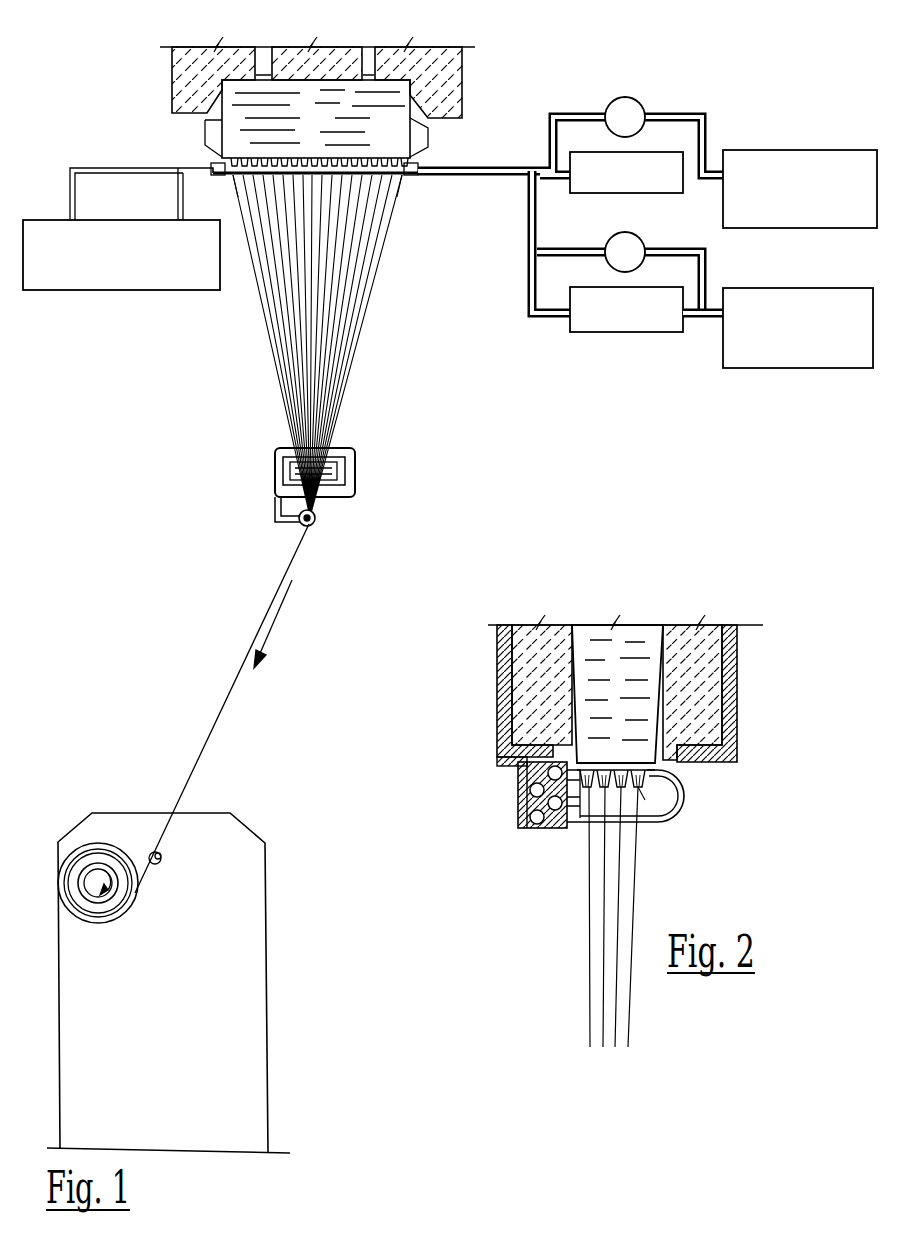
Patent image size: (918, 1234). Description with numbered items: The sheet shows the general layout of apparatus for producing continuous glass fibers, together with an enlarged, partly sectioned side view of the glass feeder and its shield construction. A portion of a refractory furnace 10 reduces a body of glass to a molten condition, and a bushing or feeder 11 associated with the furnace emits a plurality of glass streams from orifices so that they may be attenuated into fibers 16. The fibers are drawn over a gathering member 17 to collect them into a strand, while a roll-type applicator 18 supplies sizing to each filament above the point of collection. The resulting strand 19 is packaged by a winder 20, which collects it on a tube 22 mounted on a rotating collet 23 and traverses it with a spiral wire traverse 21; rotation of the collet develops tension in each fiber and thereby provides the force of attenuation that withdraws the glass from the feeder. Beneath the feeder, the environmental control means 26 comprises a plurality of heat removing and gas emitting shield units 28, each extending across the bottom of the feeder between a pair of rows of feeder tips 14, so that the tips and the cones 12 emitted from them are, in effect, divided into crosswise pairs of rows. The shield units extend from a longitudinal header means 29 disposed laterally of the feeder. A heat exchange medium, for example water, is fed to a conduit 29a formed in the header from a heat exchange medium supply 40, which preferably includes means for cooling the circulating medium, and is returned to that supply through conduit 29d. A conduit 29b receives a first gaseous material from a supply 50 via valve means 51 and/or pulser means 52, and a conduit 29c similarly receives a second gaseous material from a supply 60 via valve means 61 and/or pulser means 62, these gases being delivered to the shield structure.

In FIG. 1, the refractory furnace 10 is at (350, 44).
In FIG. 1, the bushing or feeder 11 is at (227, 98).
In FIG. 2, the bushing or feeder 11 is at (574, 652).
In FIG. 2, the cones 12 is at (645, 797).
In FIG. 1, the feeder tips 14 is at (345, 168).
In FIG. 2, the feeder tips 14 is at (652, 773).
In FIG. 1, the fibers 16 is at (305, 330).
In FIG. 1, the gathering member 17 is at (300, 525).
In FIG. 1, the roll-type applicator 18 is at (355, 450).
In FIG. 1, the strand 19 is at (272, 603).
In FIG. 1, the winder 20 is at (236, 810).
In FIG. 1, the spiral wire traverse 21 is at (155, 865).
In FIG. 1, the tube 22 is at (80, 860).
In FIG. 1, the rotating collet 23 is at (75, 890).
In FIG. 1, the environmental control means 26 is at (318, 184).
In FIG. 2, the environmental control means 26 is at (620, 921).
In FIG. 1, the shield units 28 is at (225, 172).
In FIG. 2, the shield units 28 is at (693, 801).
In FIG. 1, the longitudinal header means 29 is at (213, 165).
In FIG. 2, the longitudinal header means 29 is at (548, 830).
In FIG. 1, the conduit 29a is at (68, 181).
In FIG. 2, the conduit 29a is at (548, 773).
In FIG. 1, the conduit 29b is at (548, 163).
In FIG. 2, the conduit 29b is at (530, 790).
In FIG. 1, the conduit 29c is at (528, 198).
In FIG. 2, the conduit 29c is at (548, 803).
In FIG. 1, the conduit 29d is at (178, 195).
In FIG. 2, the conduit 29d is at (530, 817).
In FIG. 1, the heat exchange medium supply 40 is at (55, 290).
In FIG. 1, the first gaseous material supply 50 is at (820, 150).
In FIG. 1, the valve means 51 is at (640, 102).
In FIG. 1, the pulser means 52 is at (607, 193).
In FIG. 1, the second gaseous material supply 60 is at (843, 288).
In FIG. 1, the valve means 61 is at (641, 241).
In FIG. 1, the pulser means 62 is at (605, 332).